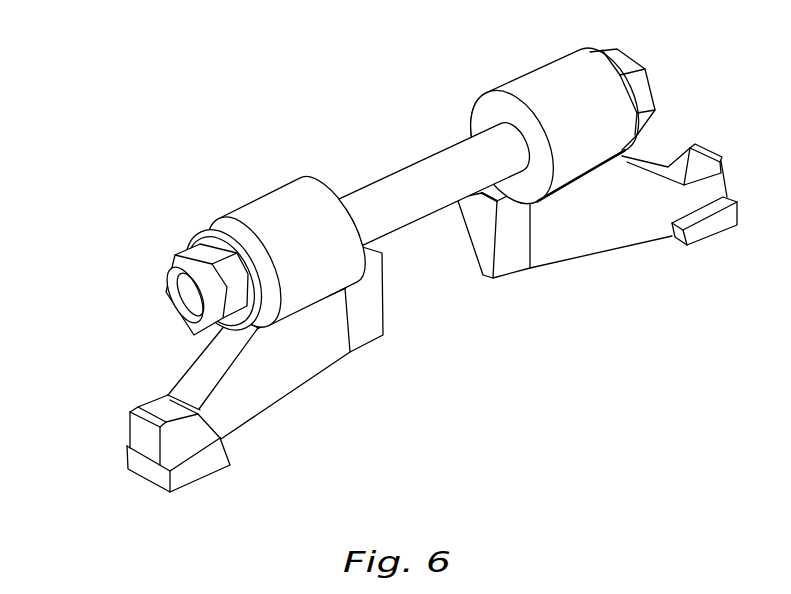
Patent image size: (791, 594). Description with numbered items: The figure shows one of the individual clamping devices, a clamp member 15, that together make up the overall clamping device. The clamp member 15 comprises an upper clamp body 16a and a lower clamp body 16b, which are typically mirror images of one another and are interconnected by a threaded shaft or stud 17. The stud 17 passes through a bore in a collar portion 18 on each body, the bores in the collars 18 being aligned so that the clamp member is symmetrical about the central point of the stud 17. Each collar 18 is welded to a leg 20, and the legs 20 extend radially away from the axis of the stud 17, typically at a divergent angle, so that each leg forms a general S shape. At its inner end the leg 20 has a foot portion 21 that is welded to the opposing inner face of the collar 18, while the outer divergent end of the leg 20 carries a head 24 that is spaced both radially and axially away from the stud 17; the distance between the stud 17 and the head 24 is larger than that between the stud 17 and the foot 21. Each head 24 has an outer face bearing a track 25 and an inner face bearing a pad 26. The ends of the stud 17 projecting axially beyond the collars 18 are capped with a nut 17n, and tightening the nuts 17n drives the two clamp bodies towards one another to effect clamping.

The clamp member 15 is at (403, 290).
The upper clamp body 16a is at (310, 412).
The lower clamp body 16b is at (583, 283).
The threaded stud 17 is at (427, 177).
The nut 17n is at (196, 250).
The collar portion 18 is at (323, 258).
The leg 20 is at (446, 325).
The foot portion 21 is at (366, 316).
The head 24 is at (417, 314).
The track 25 is at (163, 410).
The pad 26 is at (205, 465).